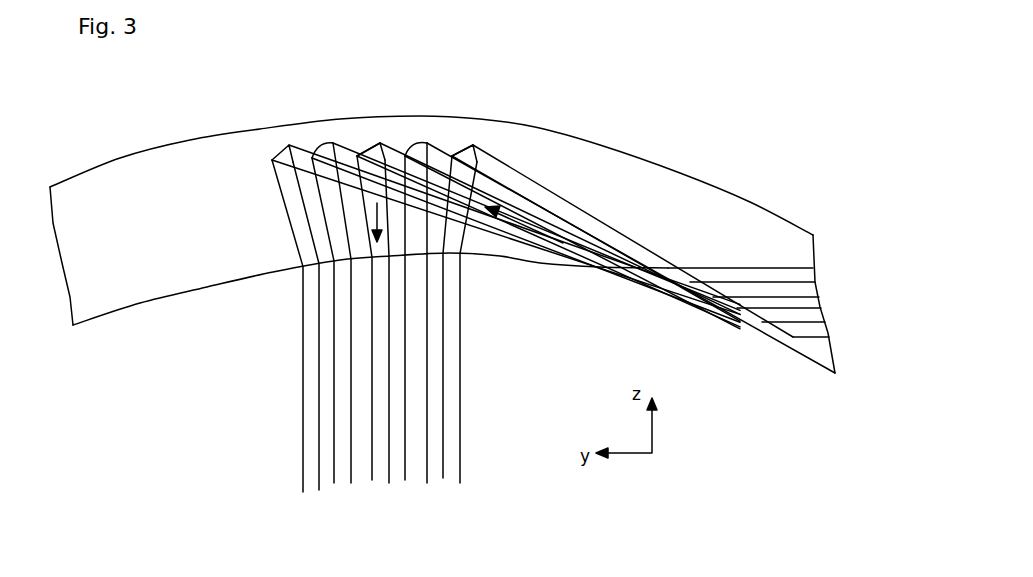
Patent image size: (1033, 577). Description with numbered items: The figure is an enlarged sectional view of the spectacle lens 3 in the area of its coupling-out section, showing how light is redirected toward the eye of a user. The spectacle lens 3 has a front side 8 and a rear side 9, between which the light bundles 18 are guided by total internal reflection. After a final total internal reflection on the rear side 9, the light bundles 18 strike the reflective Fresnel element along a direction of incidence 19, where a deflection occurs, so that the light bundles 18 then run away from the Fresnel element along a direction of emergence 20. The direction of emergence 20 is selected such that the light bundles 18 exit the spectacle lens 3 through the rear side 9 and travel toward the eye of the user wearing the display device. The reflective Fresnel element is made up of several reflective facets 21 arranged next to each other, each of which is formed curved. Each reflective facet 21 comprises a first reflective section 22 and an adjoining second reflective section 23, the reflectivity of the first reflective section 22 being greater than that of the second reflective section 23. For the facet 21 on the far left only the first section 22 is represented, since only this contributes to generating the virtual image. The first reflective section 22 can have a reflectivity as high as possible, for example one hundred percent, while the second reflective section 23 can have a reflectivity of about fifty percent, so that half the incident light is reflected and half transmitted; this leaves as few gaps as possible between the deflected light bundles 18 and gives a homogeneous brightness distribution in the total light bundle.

The spectacle lens 3 is at (190, 168).
The front side 8 is at (657, 160).
The rear side 9 is at (511, 270).
The light bundles 18 is at (668, 270).
The direction of incidence 19 is at (513, 214).
The direction of emergence 20 is at (372, 219).
The reflective facets 21 is at (278, 146).
The first reflective section 22 is at (366, 146).
The second reflective section 23 is at (341, 156).